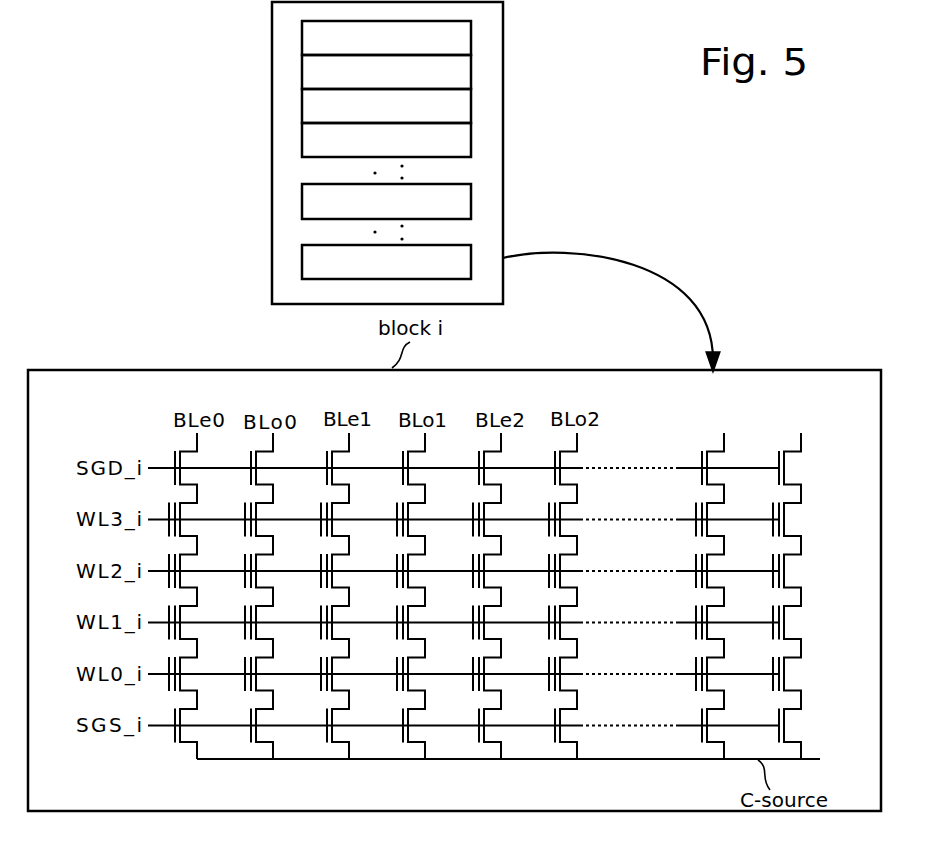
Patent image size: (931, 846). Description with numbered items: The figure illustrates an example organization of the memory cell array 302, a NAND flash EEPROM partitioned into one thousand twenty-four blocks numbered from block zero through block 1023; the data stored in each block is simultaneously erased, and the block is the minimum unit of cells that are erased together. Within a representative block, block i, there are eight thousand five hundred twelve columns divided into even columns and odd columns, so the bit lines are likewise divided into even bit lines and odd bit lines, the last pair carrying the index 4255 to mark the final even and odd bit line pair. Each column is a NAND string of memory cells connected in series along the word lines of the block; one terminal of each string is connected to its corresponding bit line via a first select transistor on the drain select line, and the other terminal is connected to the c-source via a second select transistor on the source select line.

The memory cell array 302 is at (432, 153).
The block 1023 of memory array 1023 is at (386, 262).
The bit lines BLe4255 and BLo4255 4255 is at (767, 584).